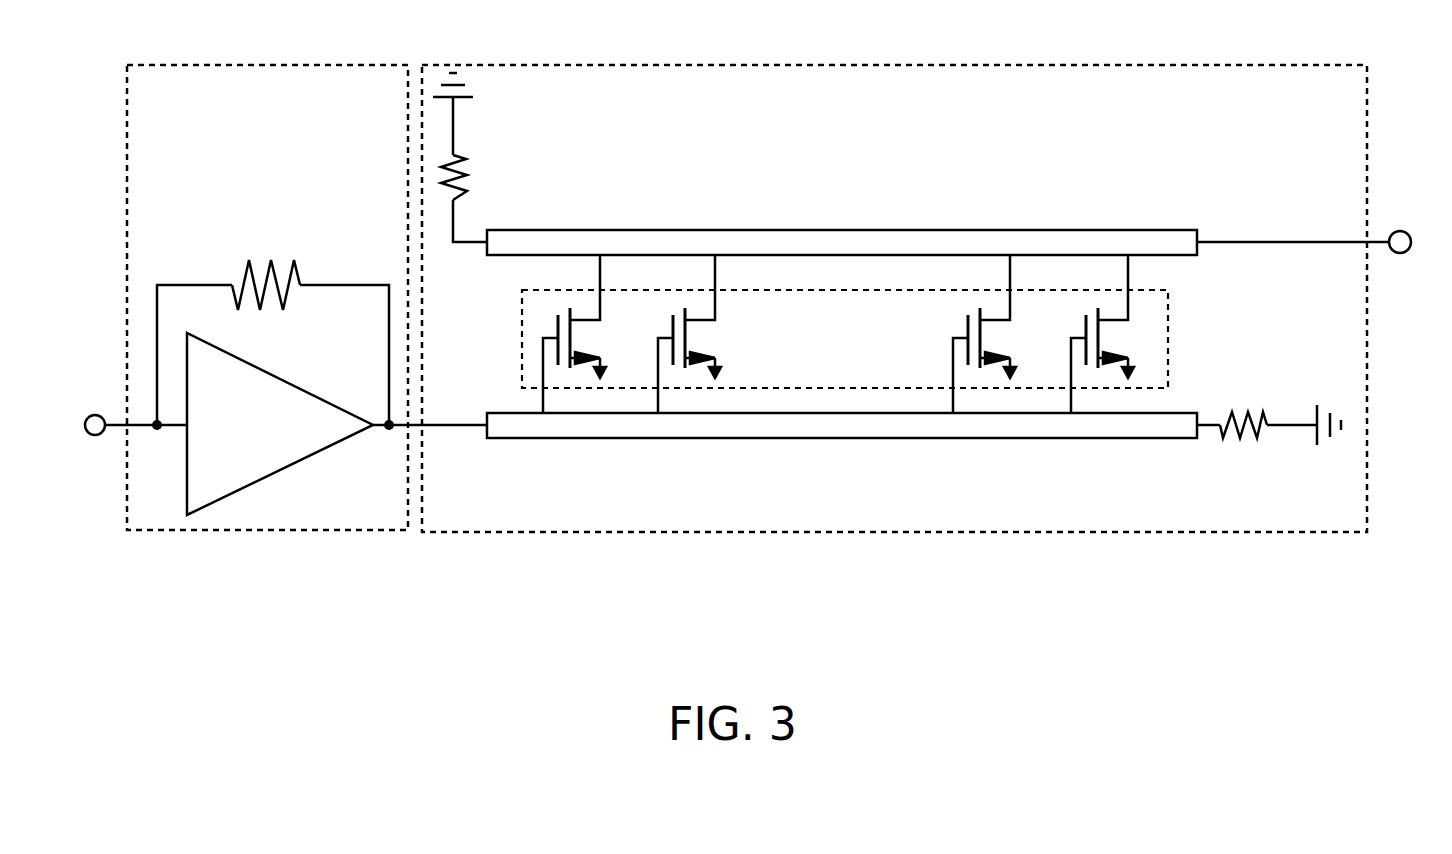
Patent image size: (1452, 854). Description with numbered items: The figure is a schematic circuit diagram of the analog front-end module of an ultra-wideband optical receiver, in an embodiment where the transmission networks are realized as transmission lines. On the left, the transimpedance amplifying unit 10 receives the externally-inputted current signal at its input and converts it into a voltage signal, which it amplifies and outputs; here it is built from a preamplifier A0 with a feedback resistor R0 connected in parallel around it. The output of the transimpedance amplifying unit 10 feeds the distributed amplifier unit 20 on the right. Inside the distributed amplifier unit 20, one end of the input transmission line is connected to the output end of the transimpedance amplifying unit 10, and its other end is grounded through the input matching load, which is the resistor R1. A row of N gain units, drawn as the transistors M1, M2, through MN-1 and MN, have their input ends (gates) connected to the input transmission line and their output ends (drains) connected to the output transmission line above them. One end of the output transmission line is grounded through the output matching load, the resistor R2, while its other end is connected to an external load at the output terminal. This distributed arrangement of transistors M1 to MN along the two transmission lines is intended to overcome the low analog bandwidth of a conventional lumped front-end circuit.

The transimpedance amplifying unit 10 is at (276, 269).
The distributed amplifier unit 20 is at (929, 270).
The preamplifier A0 is at (280, 424).
The feedback resistor R0 is at (266, 270).
The resistor (input matching load) R1 is at (1243, 441).
The resistor (output matching load) R2 is at (475, 177).
The transistor M1 is at (587, 334).
The transistor M2 is at (703, 334).
The transistor MN-1 is at (1005, 334).
The transistor MN is at (1114, 334).